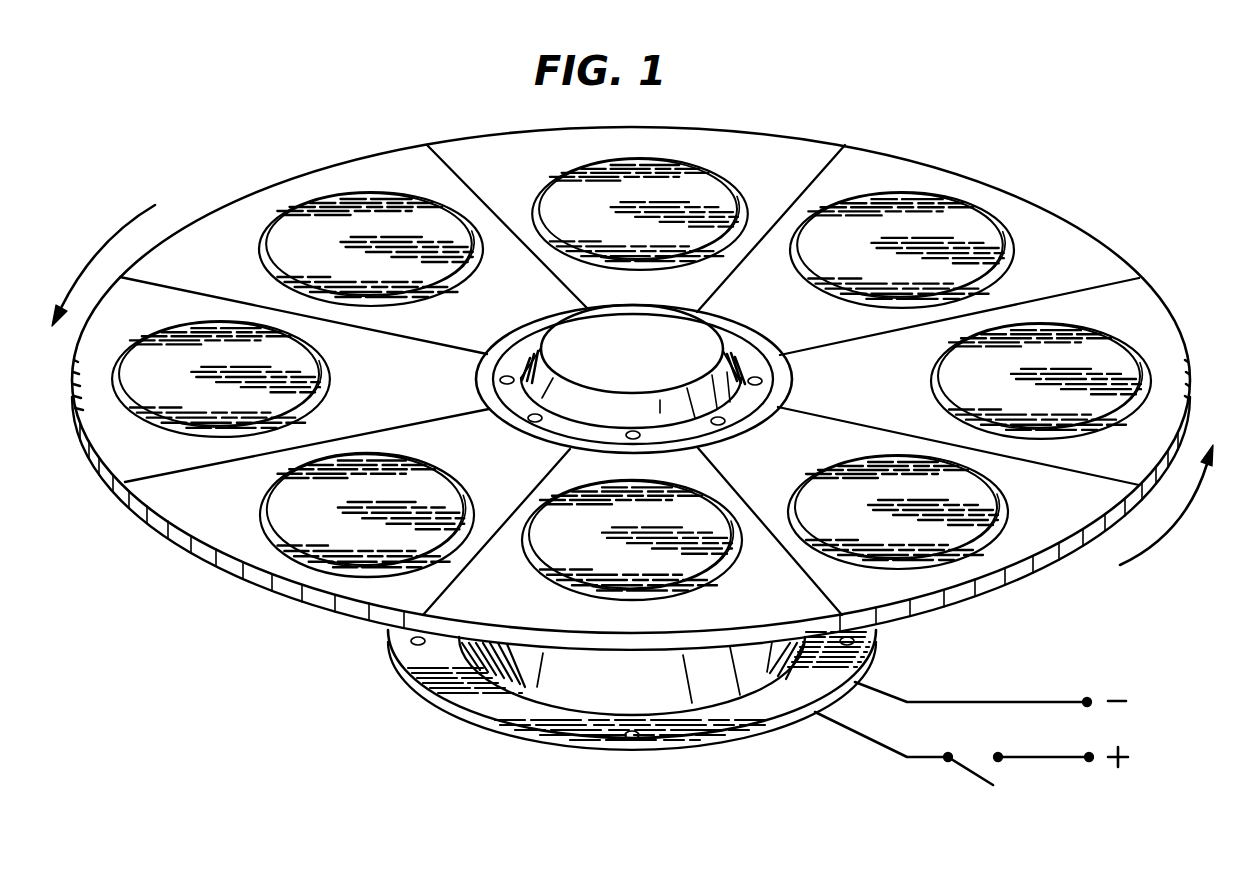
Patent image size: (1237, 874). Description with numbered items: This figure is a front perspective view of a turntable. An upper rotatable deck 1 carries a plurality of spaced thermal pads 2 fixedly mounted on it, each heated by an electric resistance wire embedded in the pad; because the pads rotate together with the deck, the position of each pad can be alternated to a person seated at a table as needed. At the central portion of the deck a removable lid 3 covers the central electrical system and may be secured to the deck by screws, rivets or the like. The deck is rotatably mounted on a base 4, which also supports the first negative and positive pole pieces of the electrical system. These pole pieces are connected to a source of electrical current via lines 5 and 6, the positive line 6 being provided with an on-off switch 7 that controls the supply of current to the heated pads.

The upper rotatable deck 1 is at (470, 148).
The thermal pad 2 is at (677, 178).
The removable lid 3 is at (626, 357).
The base 4 is at (445, 693).
The negative line 5 is at (973, 702).
The positive line 6 is at (930, 758).
The on-off switch 7 is at (990, 784).